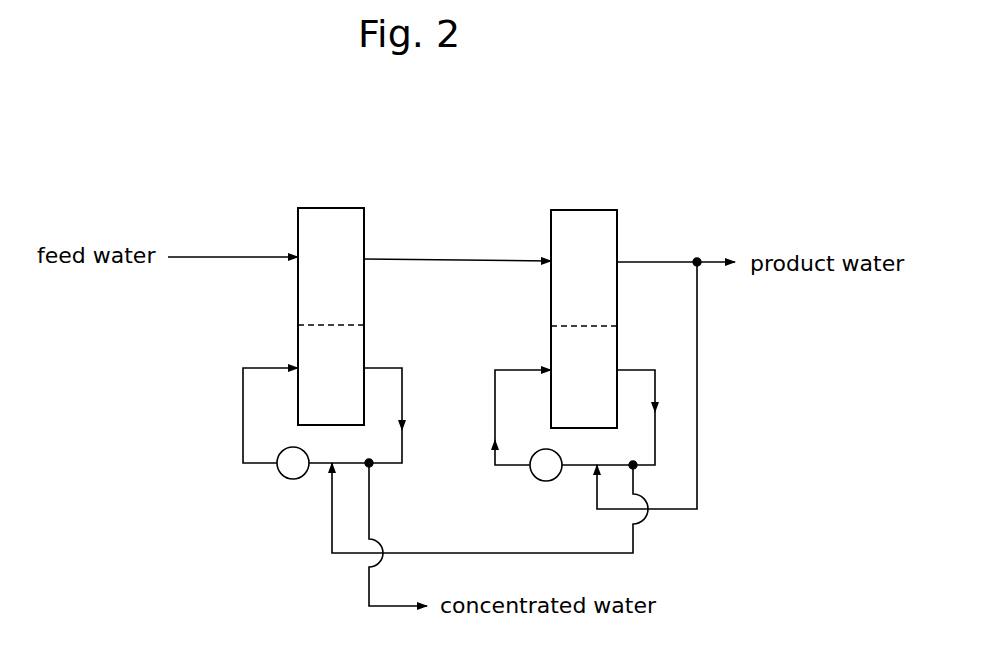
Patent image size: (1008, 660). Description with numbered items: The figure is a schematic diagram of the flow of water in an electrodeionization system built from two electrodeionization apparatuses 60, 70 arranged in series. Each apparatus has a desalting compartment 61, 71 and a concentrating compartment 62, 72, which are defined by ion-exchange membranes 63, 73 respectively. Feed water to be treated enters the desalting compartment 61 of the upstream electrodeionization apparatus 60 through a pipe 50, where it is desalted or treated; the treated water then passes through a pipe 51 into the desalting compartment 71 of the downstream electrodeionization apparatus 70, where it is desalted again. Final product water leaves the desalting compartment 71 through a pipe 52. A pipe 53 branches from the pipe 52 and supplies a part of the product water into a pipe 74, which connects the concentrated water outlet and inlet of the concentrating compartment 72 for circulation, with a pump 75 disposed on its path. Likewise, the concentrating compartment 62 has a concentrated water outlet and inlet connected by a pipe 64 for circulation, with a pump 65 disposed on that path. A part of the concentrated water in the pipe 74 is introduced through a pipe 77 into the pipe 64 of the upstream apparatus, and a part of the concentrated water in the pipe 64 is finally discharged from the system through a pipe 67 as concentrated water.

The pipe 50 is at (209, 250).
The pipe 51 is at (448, 257).
The pipe 52 is at (655, 260).
The pipe 53 is at (698, 367).
The electrodeionization apparatus 60 is at (348, 192).
The desalting compartment 61 is at (346, 269).
The concentrating compartment 62 is at (346, 383).
The ion-exchange membrane 63 is at (313, 323).
The pipe 64 is at (403, 390).
The pump 65 is at (285, 478).
The pipe 67 is at (367, 588).
The electrodeionization apparatus 70 is at (597, 192).
The desalting compartment 71 is at (599, 270).
The concentrating compartment 72 is at (599, 385).
The ion-exchange membrane 73 is at (573, 325).
The pipe 74 is at (638, 368).
The pump 75 is at (538, 480).
The pipe 77 is at (636, 540).